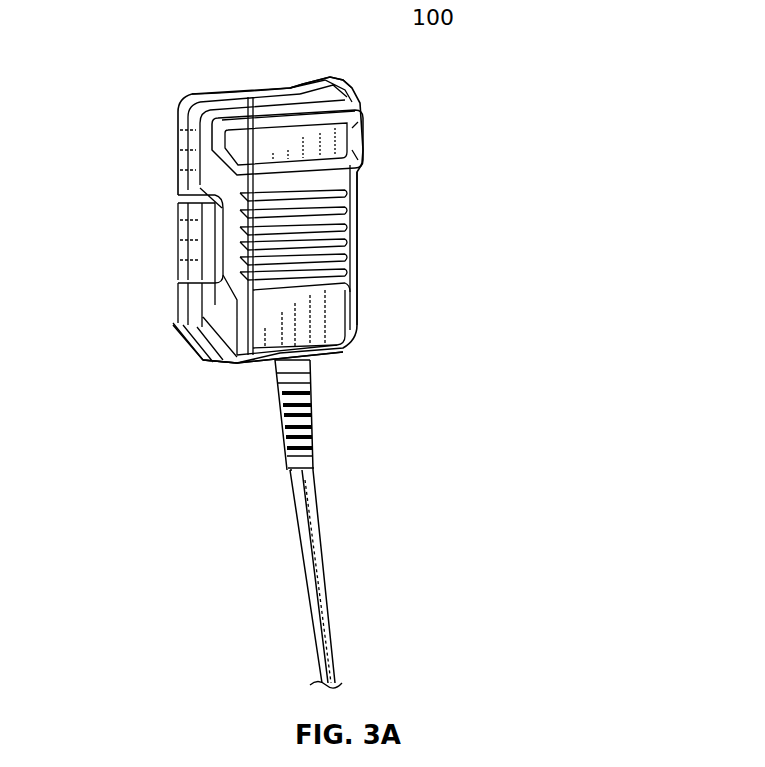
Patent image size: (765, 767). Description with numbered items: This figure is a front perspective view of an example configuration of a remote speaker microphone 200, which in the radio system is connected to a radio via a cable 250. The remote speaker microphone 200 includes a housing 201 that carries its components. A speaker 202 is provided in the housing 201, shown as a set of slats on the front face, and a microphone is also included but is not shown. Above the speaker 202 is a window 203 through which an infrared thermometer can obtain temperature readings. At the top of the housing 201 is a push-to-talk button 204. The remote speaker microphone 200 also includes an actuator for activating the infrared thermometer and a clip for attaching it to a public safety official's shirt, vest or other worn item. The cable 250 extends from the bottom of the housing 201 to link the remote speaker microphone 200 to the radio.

The remote speaker microphone 200 is at (176, 62).
The housing 201 is at (176, 366).
The speaker 202 is at (350, 234).
The window 203 is at (362, 126).
The push-to-talk button 204 is at (323, 78).
The cable 250 is at (307, 567).